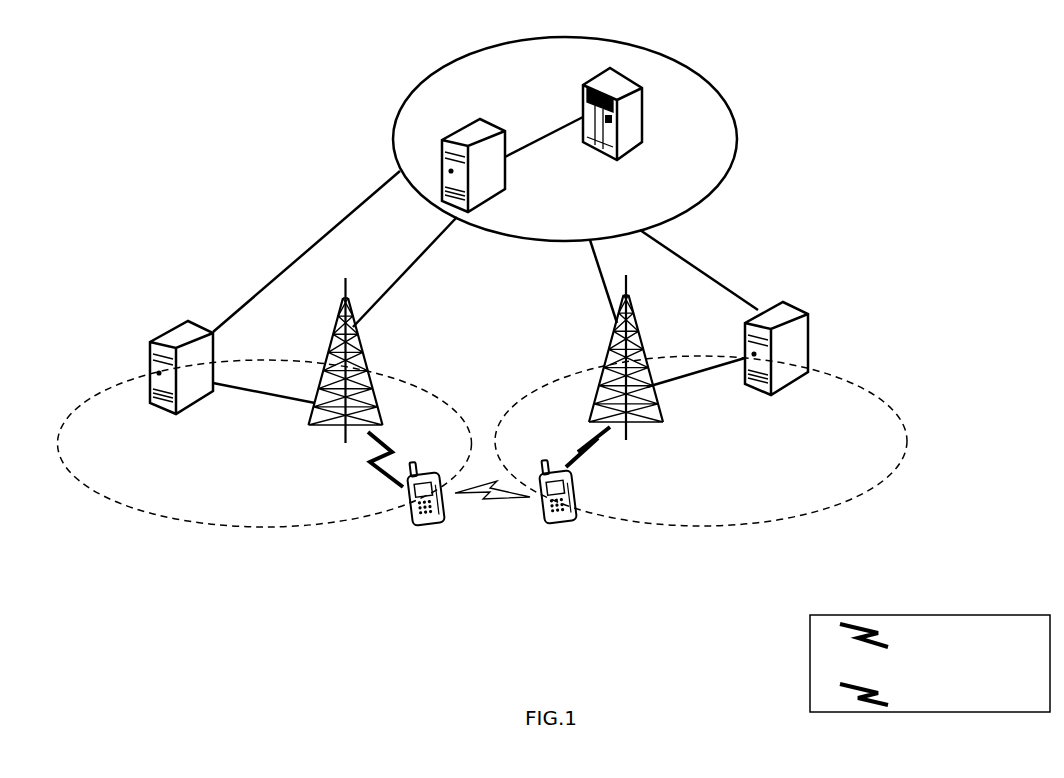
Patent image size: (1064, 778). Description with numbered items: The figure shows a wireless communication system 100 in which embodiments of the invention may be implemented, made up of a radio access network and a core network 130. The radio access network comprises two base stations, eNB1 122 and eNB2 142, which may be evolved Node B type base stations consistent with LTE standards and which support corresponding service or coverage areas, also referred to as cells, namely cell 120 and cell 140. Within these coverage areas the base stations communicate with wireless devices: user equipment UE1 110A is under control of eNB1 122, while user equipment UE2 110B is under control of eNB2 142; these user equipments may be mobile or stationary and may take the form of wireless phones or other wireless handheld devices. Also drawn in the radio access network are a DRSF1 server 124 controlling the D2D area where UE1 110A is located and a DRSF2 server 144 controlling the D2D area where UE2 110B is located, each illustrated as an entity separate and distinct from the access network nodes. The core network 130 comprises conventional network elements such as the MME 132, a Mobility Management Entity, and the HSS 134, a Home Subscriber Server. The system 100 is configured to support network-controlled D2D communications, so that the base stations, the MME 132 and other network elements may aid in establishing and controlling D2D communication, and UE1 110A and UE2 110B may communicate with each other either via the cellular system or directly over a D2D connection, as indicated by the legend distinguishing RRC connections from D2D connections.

The wireless communication system 100 is at (107, 50).
The user equipment UE1 110A is at (427, 527).
The user equipment UE2 110B is at (565, 527).
The coverage area (cell) 120 is at (168, 523).
The base station eNB1 122 is at (355, 345).
The DRSF1 server 124 is at (160, 415).
The core network 130 is at (728, 172).
The MME (Mobility Management Entity) 132 is at (500, 190).
The HSS (Home Subscriber Server) 134 is at (640, 146).
The coverage area (cell) 140 is at (785, 518).
The base station eNB2 142 is at (637, 335).
The DRSF2 server 144 is at (765, 392).